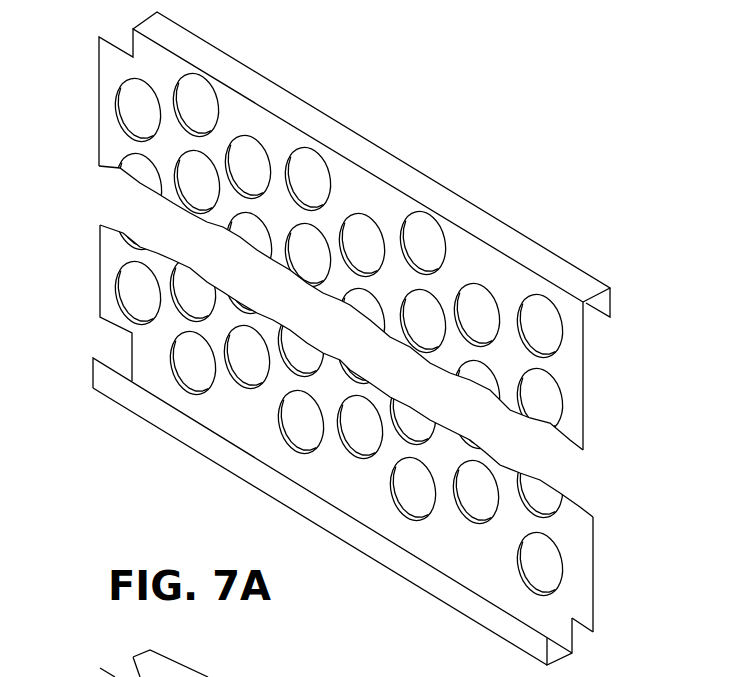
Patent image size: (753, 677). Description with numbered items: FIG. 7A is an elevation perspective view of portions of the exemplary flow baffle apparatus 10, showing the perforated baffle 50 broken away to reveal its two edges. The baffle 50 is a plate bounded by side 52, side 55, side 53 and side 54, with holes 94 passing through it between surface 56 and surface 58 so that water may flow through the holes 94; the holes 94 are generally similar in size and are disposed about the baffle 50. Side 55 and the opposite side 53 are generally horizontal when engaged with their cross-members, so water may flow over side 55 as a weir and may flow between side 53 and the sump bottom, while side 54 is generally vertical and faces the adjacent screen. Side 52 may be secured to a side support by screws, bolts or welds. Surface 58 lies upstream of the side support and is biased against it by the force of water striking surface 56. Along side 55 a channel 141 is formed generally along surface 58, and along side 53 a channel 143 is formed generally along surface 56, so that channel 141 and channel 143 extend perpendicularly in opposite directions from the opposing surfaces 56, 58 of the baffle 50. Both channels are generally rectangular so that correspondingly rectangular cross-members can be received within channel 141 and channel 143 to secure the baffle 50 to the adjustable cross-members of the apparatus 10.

The flow baffle apparatus 10 is at (575, 142).
The side of baffle 52 is at (104, 126).
The baffle 50 is at (108, 245).
The side of baffle 55 is at (473, 215).
The channel 141 is at (598, 314).
The side of baffle 54 is at (576, 360).
The holes 94 is at (358, 428).
The side of baffle 53 is at (482, 610).
The channel 143 is at (558, 630).
The surface of baffle 58 is at (596, 543).
The surface of baffle 56 is at (582, 573).